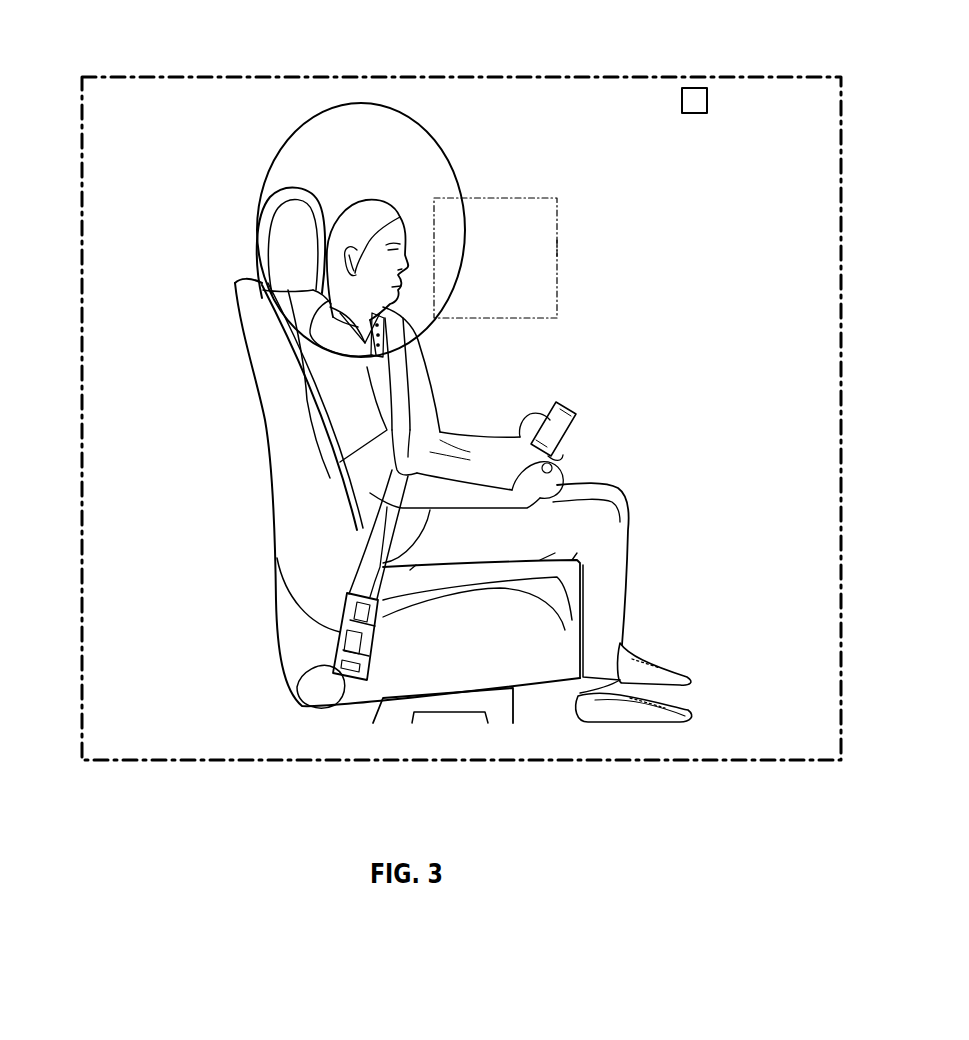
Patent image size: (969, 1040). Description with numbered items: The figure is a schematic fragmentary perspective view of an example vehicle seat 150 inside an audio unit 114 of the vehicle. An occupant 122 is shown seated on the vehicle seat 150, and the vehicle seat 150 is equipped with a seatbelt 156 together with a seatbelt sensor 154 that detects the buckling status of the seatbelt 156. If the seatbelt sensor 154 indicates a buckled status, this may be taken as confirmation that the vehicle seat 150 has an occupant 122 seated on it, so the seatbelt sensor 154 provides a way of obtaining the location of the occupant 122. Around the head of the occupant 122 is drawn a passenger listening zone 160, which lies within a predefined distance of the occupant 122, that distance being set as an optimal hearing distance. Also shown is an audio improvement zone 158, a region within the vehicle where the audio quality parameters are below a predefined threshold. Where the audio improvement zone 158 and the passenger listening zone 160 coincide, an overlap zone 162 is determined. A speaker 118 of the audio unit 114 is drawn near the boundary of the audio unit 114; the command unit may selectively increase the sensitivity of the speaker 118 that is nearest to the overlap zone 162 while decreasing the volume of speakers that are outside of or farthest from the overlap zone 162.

The audio unit 114 is at (596, 44).
The speaker 118 is at (692, 68).
The occupant 122 is at (366, 187).
The vehicle seat 150 is at (268, 440).
The seatbelt sensor 154 is at (290, 688).
The seatbelt 156 is at (395, 393).
The audio improvement zone 158 is at (557, 247).
The passenger listening zone 160 is at (432, 137).
The overlap zone 162 is at (443, 217).